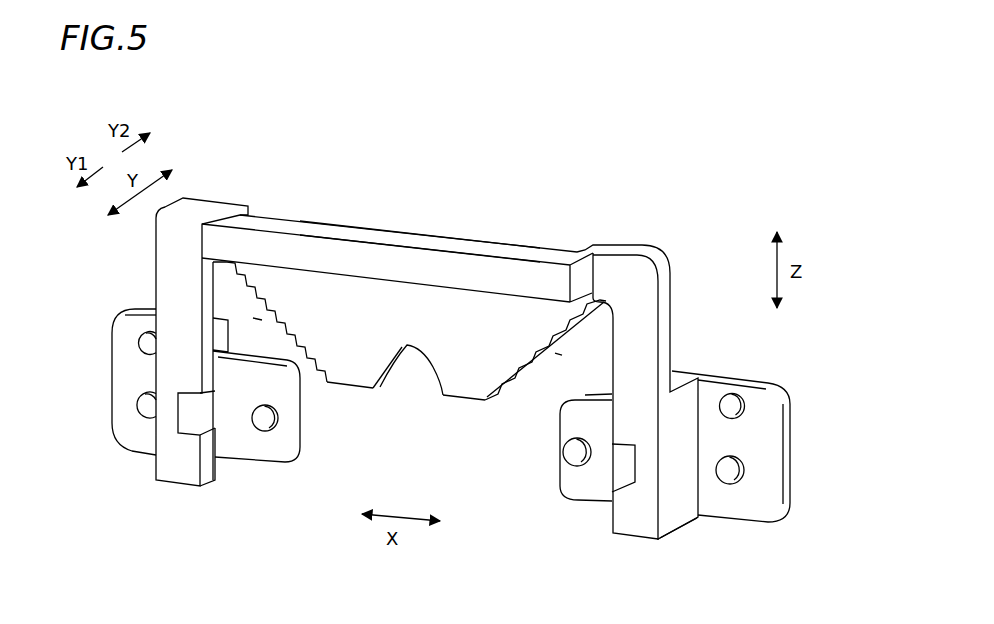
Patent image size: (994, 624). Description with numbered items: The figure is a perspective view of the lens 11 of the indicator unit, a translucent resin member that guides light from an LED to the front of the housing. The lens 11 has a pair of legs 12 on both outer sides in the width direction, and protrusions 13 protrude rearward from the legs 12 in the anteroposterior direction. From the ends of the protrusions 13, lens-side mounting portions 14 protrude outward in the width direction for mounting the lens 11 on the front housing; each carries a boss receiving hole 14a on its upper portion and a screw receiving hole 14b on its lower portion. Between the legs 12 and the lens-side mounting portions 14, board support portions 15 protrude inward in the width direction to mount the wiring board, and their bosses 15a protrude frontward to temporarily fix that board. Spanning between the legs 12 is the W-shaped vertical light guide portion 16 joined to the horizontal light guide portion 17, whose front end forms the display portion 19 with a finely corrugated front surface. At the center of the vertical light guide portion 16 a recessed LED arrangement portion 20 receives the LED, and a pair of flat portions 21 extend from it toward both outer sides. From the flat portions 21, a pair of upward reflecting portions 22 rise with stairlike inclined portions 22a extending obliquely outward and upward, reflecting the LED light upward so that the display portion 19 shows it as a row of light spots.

The lens 11 is at (611, 230).
The legs 12 is at (185, 297).
The protrusions 13 is at (681, 503).
The lens-side mounting portions 14 is at (132, 435).
The boss receiving holes 14a is at (150, 343).
The screw receiving holes 14b is at (150, 405).
The board support portions 15 is at (229, 445).
The bosses 15a is at (264, 432).
The vertical light guide portion 16 is at (449, 320).
The horizontal light guide portion 17 is at (527, 250).
The display portion 19 is at (393, 262).
The LED arrangement portion 20 is at (407, 345).
The flat portions 21 is at (350, 387).
The upward reflecting portions 22 is at (293, 345).
The inclined portions 22a is at (253, 318).